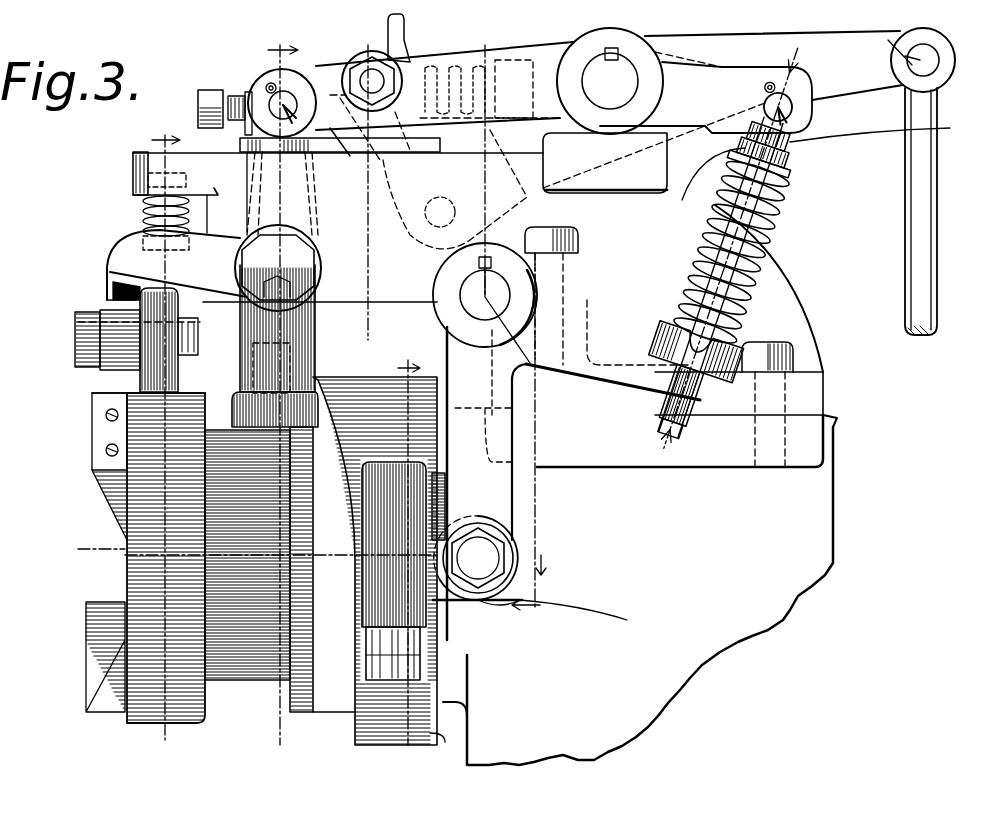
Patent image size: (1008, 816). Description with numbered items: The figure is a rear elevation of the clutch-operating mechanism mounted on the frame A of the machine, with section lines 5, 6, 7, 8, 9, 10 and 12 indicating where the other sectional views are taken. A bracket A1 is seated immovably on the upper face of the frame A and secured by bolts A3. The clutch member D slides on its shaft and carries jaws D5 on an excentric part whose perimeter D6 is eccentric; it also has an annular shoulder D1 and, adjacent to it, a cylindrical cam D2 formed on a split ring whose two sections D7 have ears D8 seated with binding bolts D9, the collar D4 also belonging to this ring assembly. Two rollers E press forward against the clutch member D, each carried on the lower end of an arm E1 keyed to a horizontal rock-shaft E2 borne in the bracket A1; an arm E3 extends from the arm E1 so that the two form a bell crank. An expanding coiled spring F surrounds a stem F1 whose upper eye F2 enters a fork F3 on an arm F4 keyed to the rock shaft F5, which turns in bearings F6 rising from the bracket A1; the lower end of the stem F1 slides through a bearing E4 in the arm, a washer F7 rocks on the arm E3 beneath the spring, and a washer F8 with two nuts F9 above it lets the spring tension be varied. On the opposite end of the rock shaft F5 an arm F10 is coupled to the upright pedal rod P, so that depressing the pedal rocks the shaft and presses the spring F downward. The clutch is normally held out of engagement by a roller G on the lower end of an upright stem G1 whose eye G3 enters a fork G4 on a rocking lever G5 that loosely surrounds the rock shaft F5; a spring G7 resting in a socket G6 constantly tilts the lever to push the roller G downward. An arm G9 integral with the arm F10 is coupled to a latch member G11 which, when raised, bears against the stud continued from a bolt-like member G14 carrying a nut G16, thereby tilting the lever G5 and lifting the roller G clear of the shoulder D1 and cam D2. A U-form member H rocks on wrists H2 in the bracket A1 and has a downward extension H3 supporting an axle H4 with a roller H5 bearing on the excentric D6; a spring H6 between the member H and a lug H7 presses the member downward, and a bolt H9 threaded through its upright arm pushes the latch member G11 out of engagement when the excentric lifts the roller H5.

The frame A is at (735, 618).
The bracket A1 is at (835, 302).
The bolts A3 is at (795, 358).
The clutch member D is at (247, 570).
The annular shoulder D1 is at (312, 700).
The cam D2 is at (355, 740).
The hub collar D4 is at (322, 716).
The jaws D5 is at (100, 660).
The excentric D6 is at (135, 722).
The ring sections D7 is at (448, 750).
The ears D8 is at (470, 603).
The binding bolts D9 is at (395, 686).
The rollers E is at (559, 616).
The arms E1 is at (486, 483).
The rock-shaft E2 is at (508, 297).
The arm E3 is at (613, 350).
The bearing E4 is at (725, 395).
The expanding coiled spring F is at (764, 263).
The stem F1 is at (767, 298).
The eye F2 is at (803, 160).
The fork F3 is at (809, 118).
The arm F4 is at (706, 97).
The rock shaft F5 is at (610, 81).
The bearings F6 is at (548, 140).
The washer F7 is at (764, 384).
The washer F8 is at (786, 193).
The nuts F9 is at (842, 189).
The arm F10 is at (905, 62).
The roller G is at (238, 416).
The stem G1 is at (92, 398).
The eye G3 is at (230, 122).
The fork G4 is at (268, 78).
The rocking lever G5 is at (535, 42).
The socket G6 is at (884, 130).
The expanding coiled spring G7 is at (702, 183).
The arm G9 is at (555, 150).
The latch member G11 is at (490, 127).
The bolt-like member G14 is at (370, 129).
The nut G16 is at (364, 58).
The U-form member H is at (316, 252).
The axle or wrist H2 is at (150, 264).
The downward extension H3 is at (110, 298).
The axle H4 is at (74, 333).
The roller H5 is at (140, 380).
The expanding coiled spring H6 is at (143, 222).
The lug H7 is at (133, 170).
The bolt H9 is at (212, 92).
The pedal rod P is at (938, 300).
The section line 5- 5 is at (309, 555).
The section line 6- 6 is at (159, 436).
The section line 7- 7 is at (402, 552).
The section line 8- 8 is at (274, 390).
The section line 9- 9 is at (362, 191).
The section line 10- 10 is at (509, 327).
The section line 12- 12 is at (734, 242).